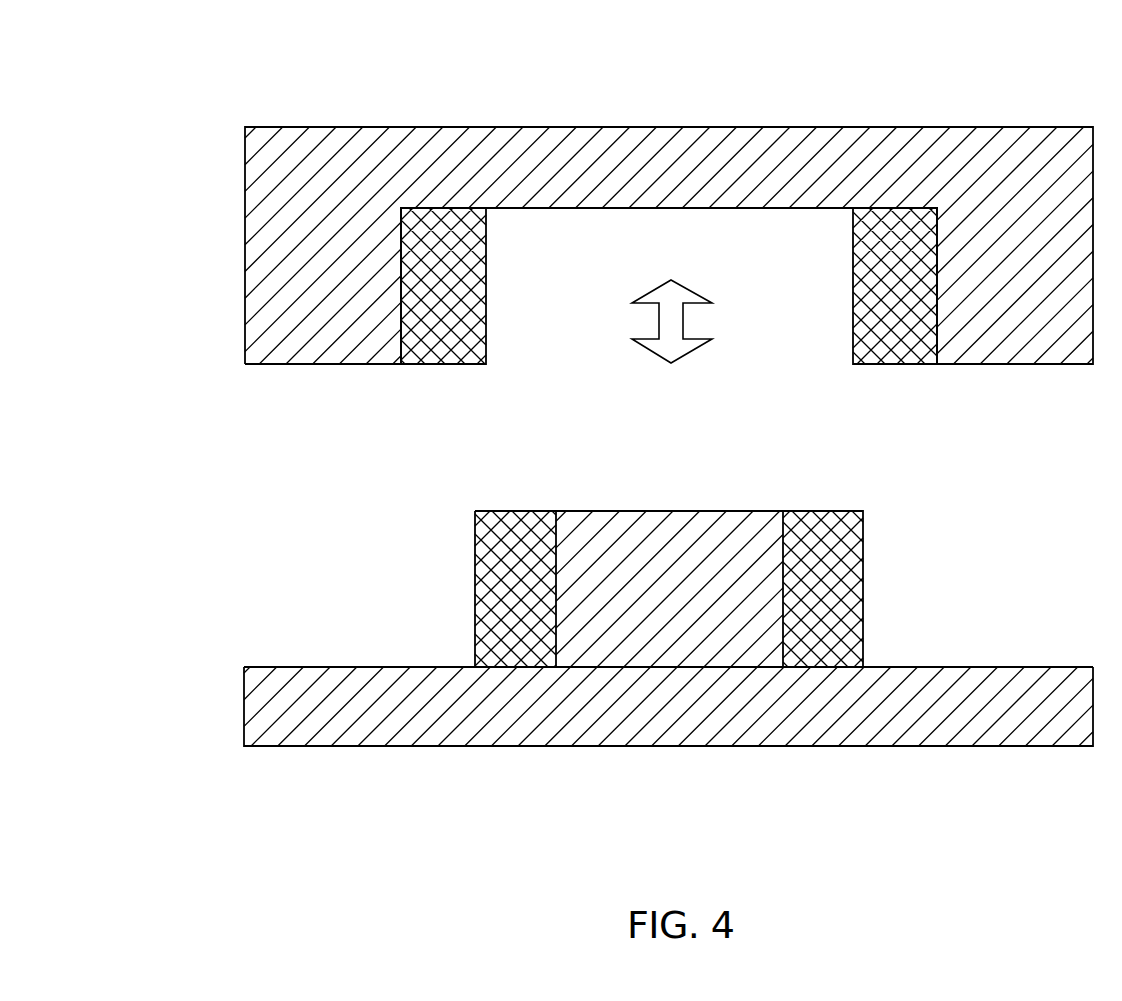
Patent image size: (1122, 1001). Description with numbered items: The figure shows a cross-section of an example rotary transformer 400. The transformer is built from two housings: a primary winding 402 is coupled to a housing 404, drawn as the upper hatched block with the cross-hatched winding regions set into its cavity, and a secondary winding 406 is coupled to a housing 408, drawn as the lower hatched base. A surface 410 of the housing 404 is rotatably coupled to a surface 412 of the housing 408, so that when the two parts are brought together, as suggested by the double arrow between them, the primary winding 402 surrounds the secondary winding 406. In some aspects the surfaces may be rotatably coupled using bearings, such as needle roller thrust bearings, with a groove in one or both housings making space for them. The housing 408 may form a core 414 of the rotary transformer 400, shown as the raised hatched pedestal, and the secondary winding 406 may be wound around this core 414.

The rotary transformer 400 is at (173, 67).
The primary winding 402 is at (487, 285).
The housing 404 is at (245, 235).
The secondary winding 406 is at (493, 510).
The housing 408 is at (668, 746).
The surface 410 is at (318, 375).
The surface 412 is at (330, 642).
The core 414 is at (741, 500).